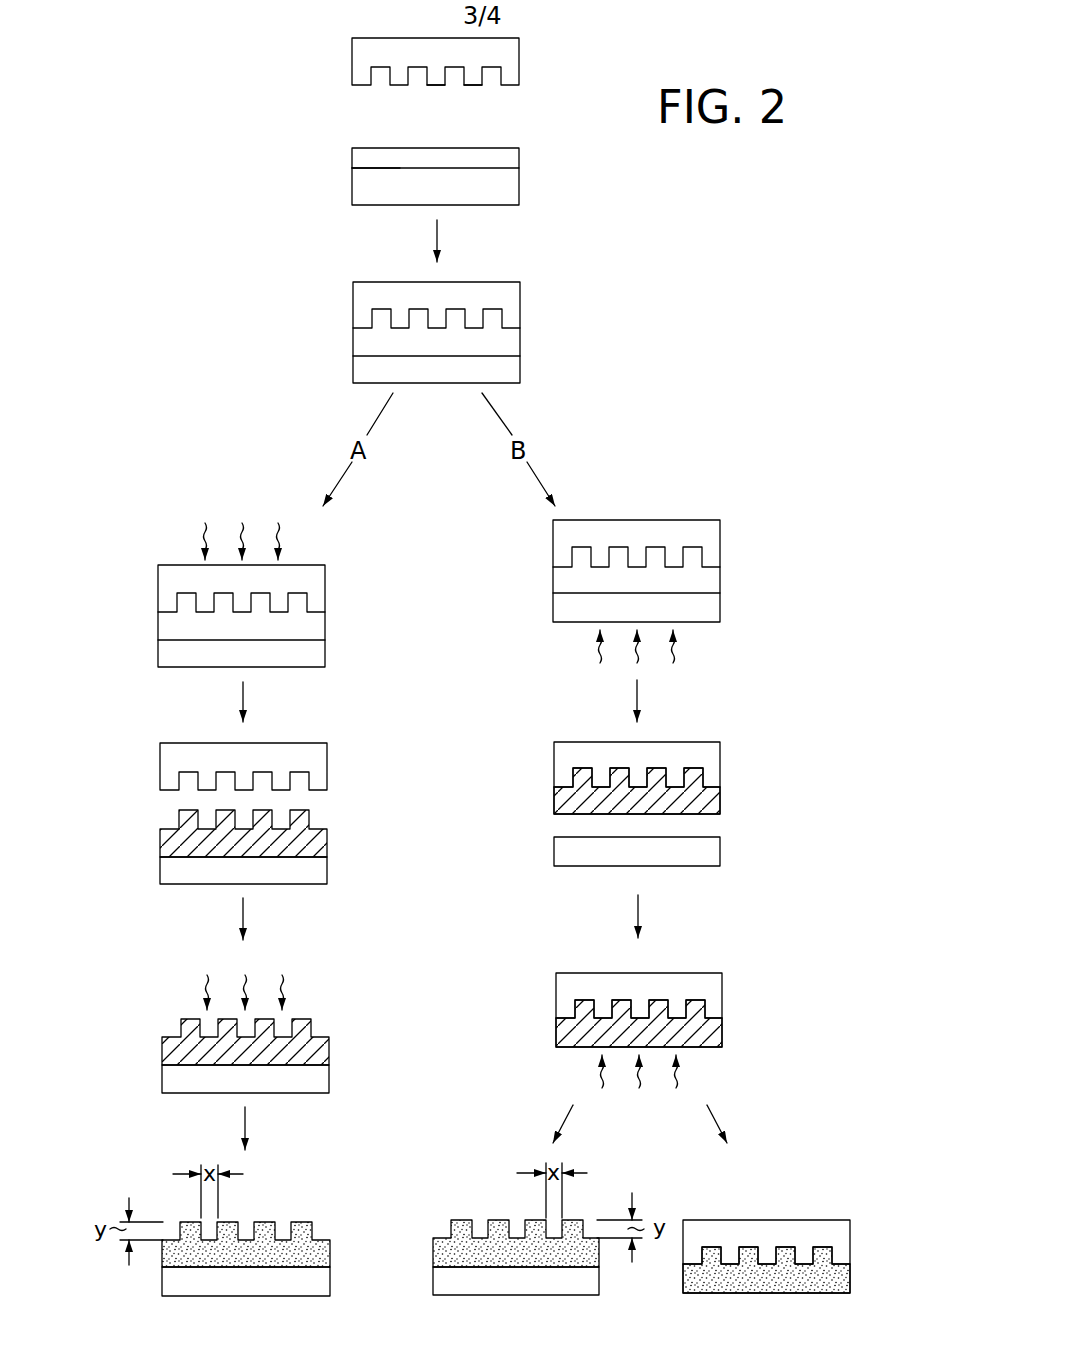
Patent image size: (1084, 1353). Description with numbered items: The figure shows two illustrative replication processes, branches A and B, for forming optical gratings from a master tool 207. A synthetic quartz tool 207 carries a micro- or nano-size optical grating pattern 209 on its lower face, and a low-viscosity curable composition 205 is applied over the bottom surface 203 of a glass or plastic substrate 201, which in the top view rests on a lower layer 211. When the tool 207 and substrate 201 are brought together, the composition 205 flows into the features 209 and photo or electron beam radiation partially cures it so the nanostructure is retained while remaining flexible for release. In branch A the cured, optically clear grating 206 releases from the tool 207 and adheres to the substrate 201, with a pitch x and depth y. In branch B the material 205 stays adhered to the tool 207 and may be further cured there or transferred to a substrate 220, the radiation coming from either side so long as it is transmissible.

The substrate 201 is at (506, 372).
The bottom surface of substrate 203 is at (389, 166).
The curable composition 205 is at (503, 160).
The optical grating 206 is at (310, 1250).
The tool 207 is at (502, 55).
The optical grating pattern 209 is at (437, 86).
The carrier 211 is at (507, 192).
The substrate 220 is at (227, 1220).